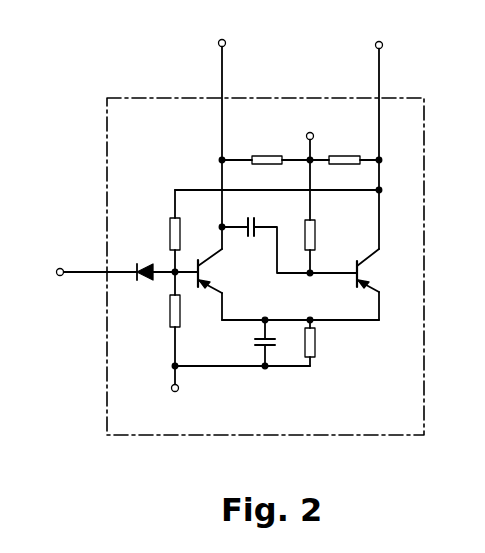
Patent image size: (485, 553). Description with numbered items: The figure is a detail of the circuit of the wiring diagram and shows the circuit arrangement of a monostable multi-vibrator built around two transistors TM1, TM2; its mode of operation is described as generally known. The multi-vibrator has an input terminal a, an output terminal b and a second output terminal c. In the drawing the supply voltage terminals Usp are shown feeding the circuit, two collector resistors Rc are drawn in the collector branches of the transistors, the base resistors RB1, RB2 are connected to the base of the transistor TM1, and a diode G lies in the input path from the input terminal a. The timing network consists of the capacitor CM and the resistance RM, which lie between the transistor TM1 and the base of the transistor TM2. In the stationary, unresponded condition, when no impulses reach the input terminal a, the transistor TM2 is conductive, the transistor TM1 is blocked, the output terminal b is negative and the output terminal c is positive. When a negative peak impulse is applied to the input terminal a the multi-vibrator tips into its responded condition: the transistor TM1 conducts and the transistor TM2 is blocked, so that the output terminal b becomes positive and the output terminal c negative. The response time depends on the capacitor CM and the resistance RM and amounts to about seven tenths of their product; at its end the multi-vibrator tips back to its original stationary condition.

The input terminal a is at (85, 273).
The output terminal b is at (220, 131).
The second output terminal c is at (378, 132).
The supply voltage terminals Usp is at (239, 264).
The collector resistor Rc is at (300, 171).
The base resistor RB1 is at (148, 231).
The base resistor RB2 is at (148, 320).
The diode G is at (158, 283).
The transistor TM1 is at (228, 284).
The transistor TM2 is at (386, 284).
The capacitor CM is at (288, 235).
The resistance RM is at (325, 248).